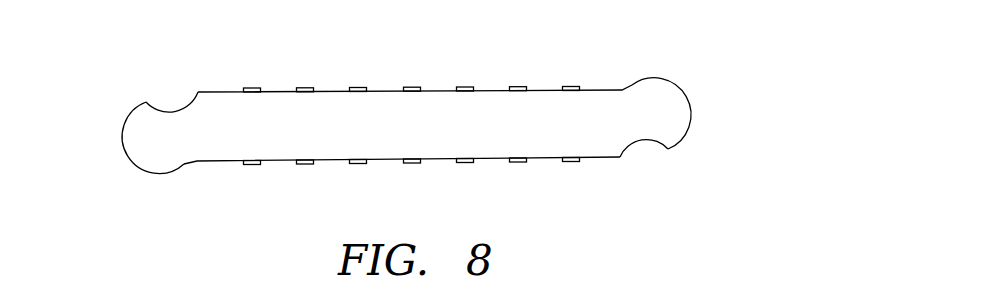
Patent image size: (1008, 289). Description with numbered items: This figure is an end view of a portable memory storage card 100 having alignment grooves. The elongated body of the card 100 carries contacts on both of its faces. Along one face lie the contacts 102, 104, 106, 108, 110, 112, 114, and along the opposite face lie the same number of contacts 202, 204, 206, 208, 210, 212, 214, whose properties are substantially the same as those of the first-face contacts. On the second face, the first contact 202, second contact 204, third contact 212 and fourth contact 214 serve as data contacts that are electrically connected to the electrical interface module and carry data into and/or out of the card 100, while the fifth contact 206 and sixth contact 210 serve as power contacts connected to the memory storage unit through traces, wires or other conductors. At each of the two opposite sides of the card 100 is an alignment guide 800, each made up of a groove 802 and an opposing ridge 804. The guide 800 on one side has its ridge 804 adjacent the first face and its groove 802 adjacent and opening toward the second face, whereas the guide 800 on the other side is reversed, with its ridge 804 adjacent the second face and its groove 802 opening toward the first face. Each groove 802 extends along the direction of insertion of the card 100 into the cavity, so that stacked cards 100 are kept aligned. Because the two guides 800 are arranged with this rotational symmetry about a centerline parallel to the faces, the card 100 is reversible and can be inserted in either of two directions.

The portable memory storage card 100 is at (606, 64).
The contact 102 is at (253, 165).
The contact 104 is at (306, 164).
The contact 106 is at (359, 164).
The contact 108 is at (413, 163).
The contact 110 is at (466, 163).
The contact 112 is at (519, 162).
The contact 114 is at (572, 162).
The first contact 202 is at (572, 87).
The second contact 204 is at (519, 87).
The fifth contact 206 is at (466, 87).
The contact 208 is at (413, 88).
The sixth contact 210 is at (359, 88).
The third contact 212 is at (306, 88).
The fourth contact 214 is at (253, 88).
The alignment guide 800 is at (407, 124).
The groove 802 is at (172, 110).
The ridge 804 is at (162, 172).